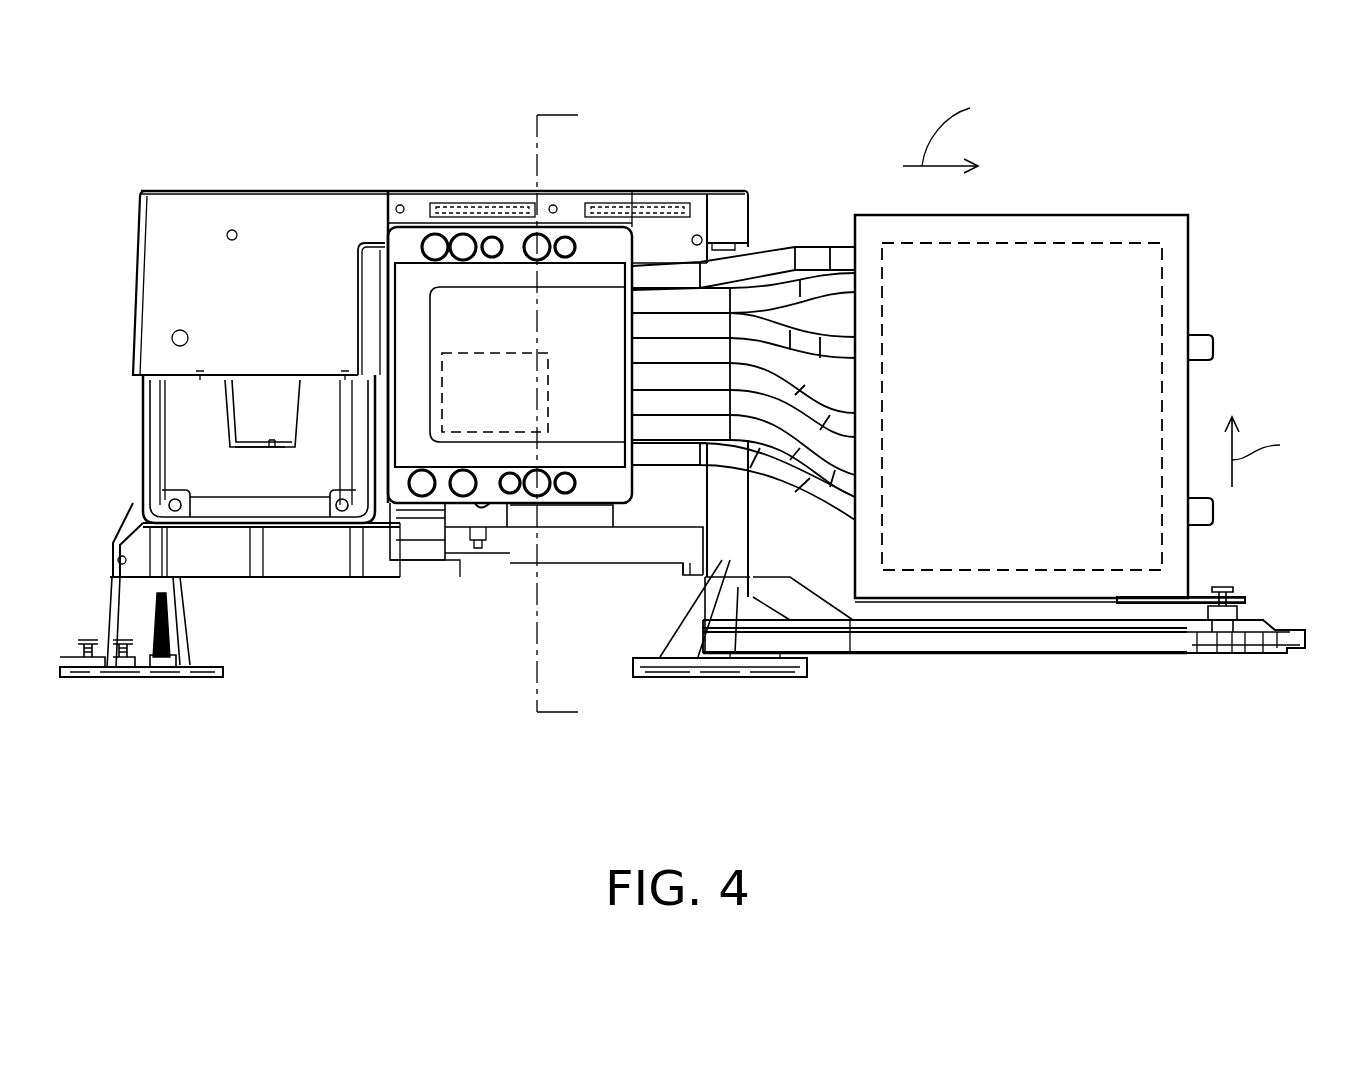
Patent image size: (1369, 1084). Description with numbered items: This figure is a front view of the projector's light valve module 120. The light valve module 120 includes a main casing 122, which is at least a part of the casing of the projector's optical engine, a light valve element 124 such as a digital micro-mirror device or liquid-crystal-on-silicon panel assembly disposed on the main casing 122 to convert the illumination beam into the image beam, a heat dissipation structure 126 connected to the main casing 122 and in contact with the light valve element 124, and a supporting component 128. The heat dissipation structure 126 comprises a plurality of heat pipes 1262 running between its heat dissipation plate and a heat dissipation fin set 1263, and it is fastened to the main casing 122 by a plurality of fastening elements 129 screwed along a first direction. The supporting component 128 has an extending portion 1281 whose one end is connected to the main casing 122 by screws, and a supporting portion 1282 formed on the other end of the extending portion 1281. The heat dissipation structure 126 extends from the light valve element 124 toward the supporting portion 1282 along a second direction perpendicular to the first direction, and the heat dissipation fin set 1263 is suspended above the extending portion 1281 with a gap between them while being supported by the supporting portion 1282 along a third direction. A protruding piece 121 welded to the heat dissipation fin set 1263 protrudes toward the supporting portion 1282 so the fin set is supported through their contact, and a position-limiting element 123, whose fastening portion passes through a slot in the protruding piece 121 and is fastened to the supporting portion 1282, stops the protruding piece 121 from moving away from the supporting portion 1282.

The light valve module 120 is at (691, 455).
The protruding piece 121 is at (1194, 597).
The main casing 122 is at (277, 205).
The position-limiting element 123 is at (1222, 588).
The light valve element 124 is at (475, 352).
The heat dissipation structure 126 is at (926, 359).
The heat pipes 1262 is at (772, 262).
The heat dissipation fin set 1263 is at (1045, 243).
The supporting component 128 is at (1004, 699).
The extending portion 1281 is at (1113, 640).
The supporting portion 1282 is at (1222, 613).
The fastening elements 129 is at (536, 242).